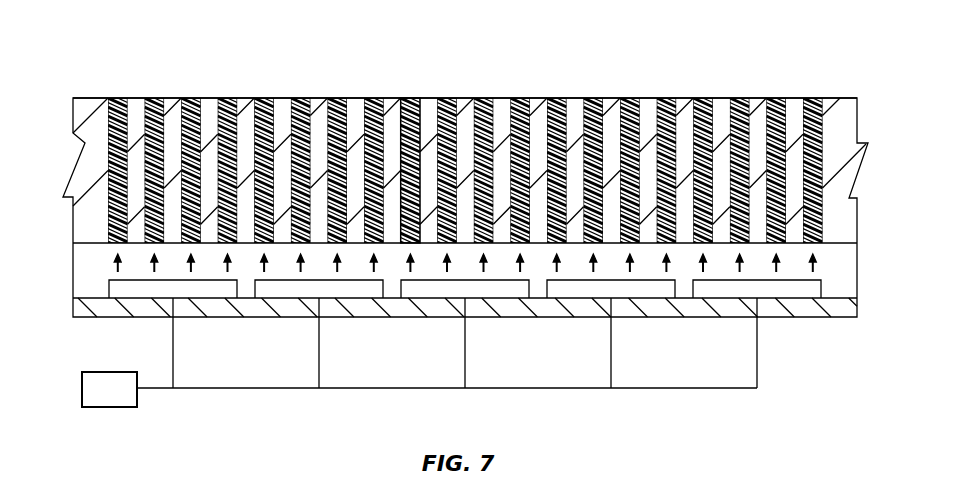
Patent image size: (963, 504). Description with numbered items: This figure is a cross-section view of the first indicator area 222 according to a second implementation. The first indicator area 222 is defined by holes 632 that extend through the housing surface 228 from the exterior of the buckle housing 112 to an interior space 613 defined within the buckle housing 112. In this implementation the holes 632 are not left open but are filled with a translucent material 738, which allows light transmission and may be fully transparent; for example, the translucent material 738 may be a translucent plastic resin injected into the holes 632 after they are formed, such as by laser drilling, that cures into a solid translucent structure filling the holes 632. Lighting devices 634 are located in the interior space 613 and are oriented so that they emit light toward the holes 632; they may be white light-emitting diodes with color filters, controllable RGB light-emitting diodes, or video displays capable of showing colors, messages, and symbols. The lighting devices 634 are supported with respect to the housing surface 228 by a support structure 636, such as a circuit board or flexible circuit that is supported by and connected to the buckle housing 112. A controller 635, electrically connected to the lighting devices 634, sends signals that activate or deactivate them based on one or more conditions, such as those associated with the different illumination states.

The buckle housing 112 is at (848, 106).
The housing surface 228 is at (82, 97).
The first indicator area 222 is at (276, 84).
The holes 632 is at (517, 97).
The translucent material 738 is at (412, 122).
The interior space 613 is at (92, 271).
The lighting devices 634 is at (789, 293).
The support structure 636 is at (673, 318).
The controller 635 is at (96, 399).